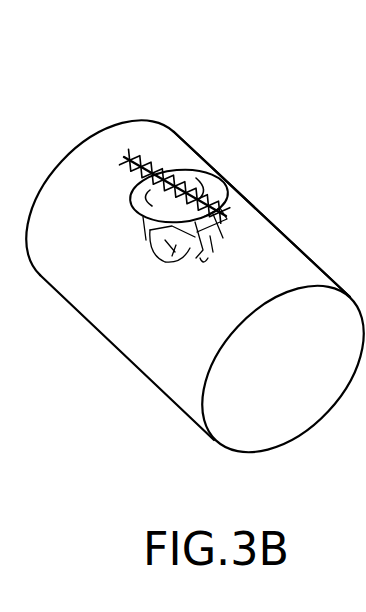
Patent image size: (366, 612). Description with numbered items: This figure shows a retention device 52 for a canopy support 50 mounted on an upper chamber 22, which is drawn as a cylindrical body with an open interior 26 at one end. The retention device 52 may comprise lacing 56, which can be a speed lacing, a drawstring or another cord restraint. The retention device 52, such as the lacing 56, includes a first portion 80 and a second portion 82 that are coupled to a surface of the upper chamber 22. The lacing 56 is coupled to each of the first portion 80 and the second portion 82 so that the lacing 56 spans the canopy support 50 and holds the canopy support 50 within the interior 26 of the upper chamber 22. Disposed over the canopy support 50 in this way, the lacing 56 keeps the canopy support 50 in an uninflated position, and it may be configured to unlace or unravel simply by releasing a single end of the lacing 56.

The upper chamber 22 is at (168, 378).
The interior 26 is at (323, 411).
The canopy support 50 is at (130, 258).
The retention device 52 is at (256, 118).
The lacing 56 is at (237, 207).
The first portion 80 is at (238, 238).
The second portion 82 is at (118, 155).